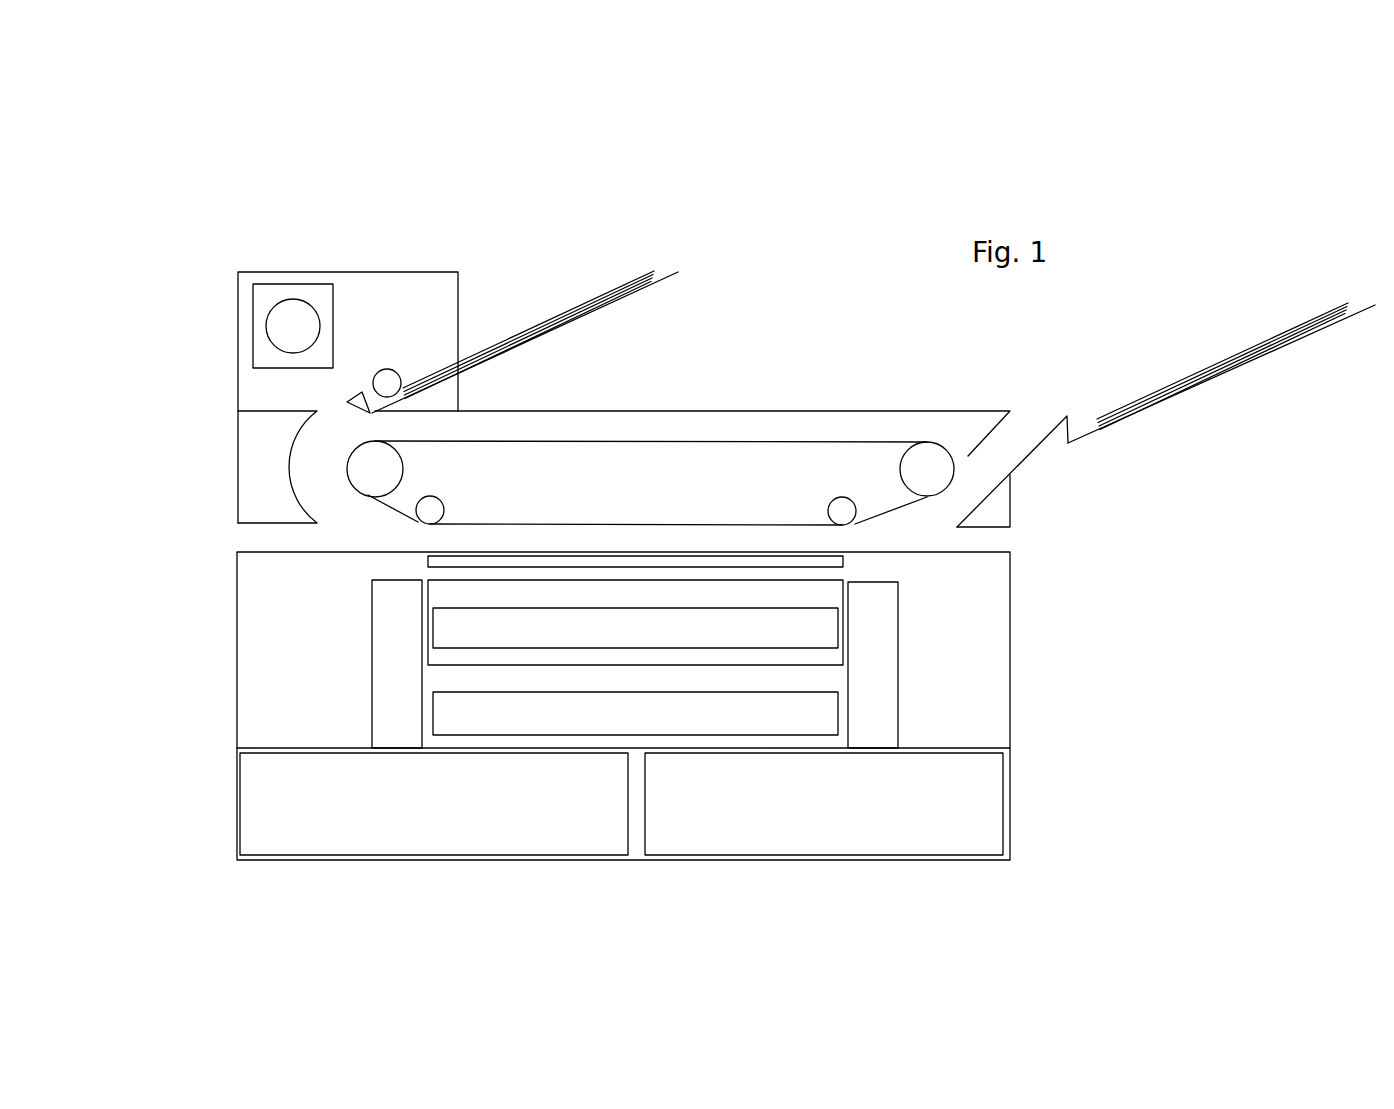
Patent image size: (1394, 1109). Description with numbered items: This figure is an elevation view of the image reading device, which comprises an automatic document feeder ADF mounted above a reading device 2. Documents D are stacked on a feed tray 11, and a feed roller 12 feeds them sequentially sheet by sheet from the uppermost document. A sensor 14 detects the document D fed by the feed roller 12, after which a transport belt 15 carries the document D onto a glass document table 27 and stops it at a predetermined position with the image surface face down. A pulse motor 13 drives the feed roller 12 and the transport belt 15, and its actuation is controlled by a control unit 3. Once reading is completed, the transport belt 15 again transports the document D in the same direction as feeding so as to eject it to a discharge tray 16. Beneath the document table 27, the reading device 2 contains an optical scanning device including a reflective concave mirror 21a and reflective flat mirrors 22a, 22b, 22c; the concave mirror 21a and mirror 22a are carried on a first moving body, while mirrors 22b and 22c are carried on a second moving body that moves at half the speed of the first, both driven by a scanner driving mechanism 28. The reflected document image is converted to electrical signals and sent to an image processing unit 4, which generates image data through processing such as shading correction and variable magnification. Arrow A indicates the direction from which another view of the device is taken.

The reading device 2 is at (226, 640).
The control unit 3 is at (434, 804).
The image processing unit 4 is at (824, 804).
The feed tray 11 is at (598, 311).
The feed roller 12 is at (397, 372).
The pulse motor 13 is at (310, 305).
The sensor 14 is at (349, 400).
The transport belt 15 is at (713, 525).
The discharge tray 16 is at (1302, 340).
The reflective concave mirror 21a is at (828, 592).
The reflective flat mirror 22a is at (827, 632).
The reflective flat mirror 22b is at (791, 637).
The reflective flat mirror 22c is at (827, 717).
The glass document table 27 is at (823, 563).
The scanner driving mechanism 28 is at (385, 685).
The arrow A direction A is at (204, 549).
The document D is at (590, 301).
The automatic document feeder ADF is at (770, 404).